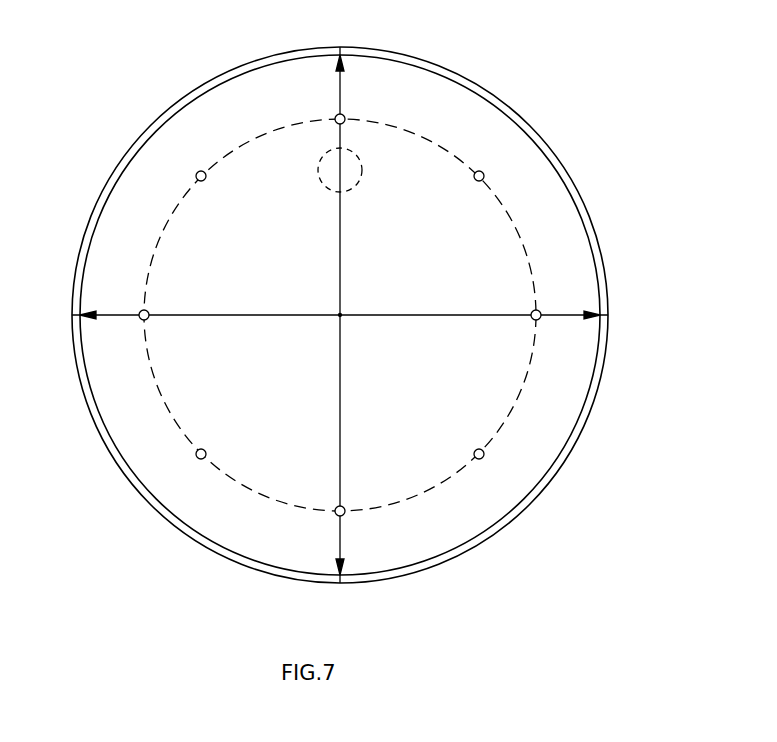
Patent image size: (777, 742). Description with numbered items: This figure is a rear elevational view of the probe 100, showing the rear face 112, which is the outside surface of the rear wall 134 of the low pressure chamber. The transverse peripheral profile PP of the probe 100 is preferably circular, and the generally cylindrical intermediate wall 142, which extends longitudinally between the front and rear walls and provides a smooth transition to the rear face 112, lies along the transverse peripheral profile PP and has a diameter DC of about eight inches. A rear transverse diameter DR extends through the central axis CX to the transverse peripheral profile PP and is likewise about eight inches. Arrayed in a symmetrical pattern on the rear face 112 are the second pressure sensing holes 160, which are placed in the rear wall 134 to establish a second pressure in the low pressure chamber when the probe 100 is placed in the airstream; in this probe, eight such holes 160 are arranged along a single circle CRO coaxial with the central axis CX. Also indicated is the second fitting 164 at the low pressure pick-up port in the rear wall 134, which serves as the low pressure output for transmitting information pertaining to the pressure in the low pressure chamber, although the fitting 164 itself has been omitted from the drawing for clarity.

The probe 100 is at (145, 118).
The intermediate wall 142 is at (393, 48).
The transverse peripheral profile PP is at (492, 100).
The rear face 112 is at (552, 190).
The rear wall 134 is at (110, 413).
The circle CRO is at (172, 420).
The diameter of intermediate wall DC is at (342, 233).
The rear transverse diameter DR is at (465, 318).
The central axis CX is at (342, 312).
The second pressure sensing holes 160 is at (336, 116).
The second fitting 164 is at (362, 178).